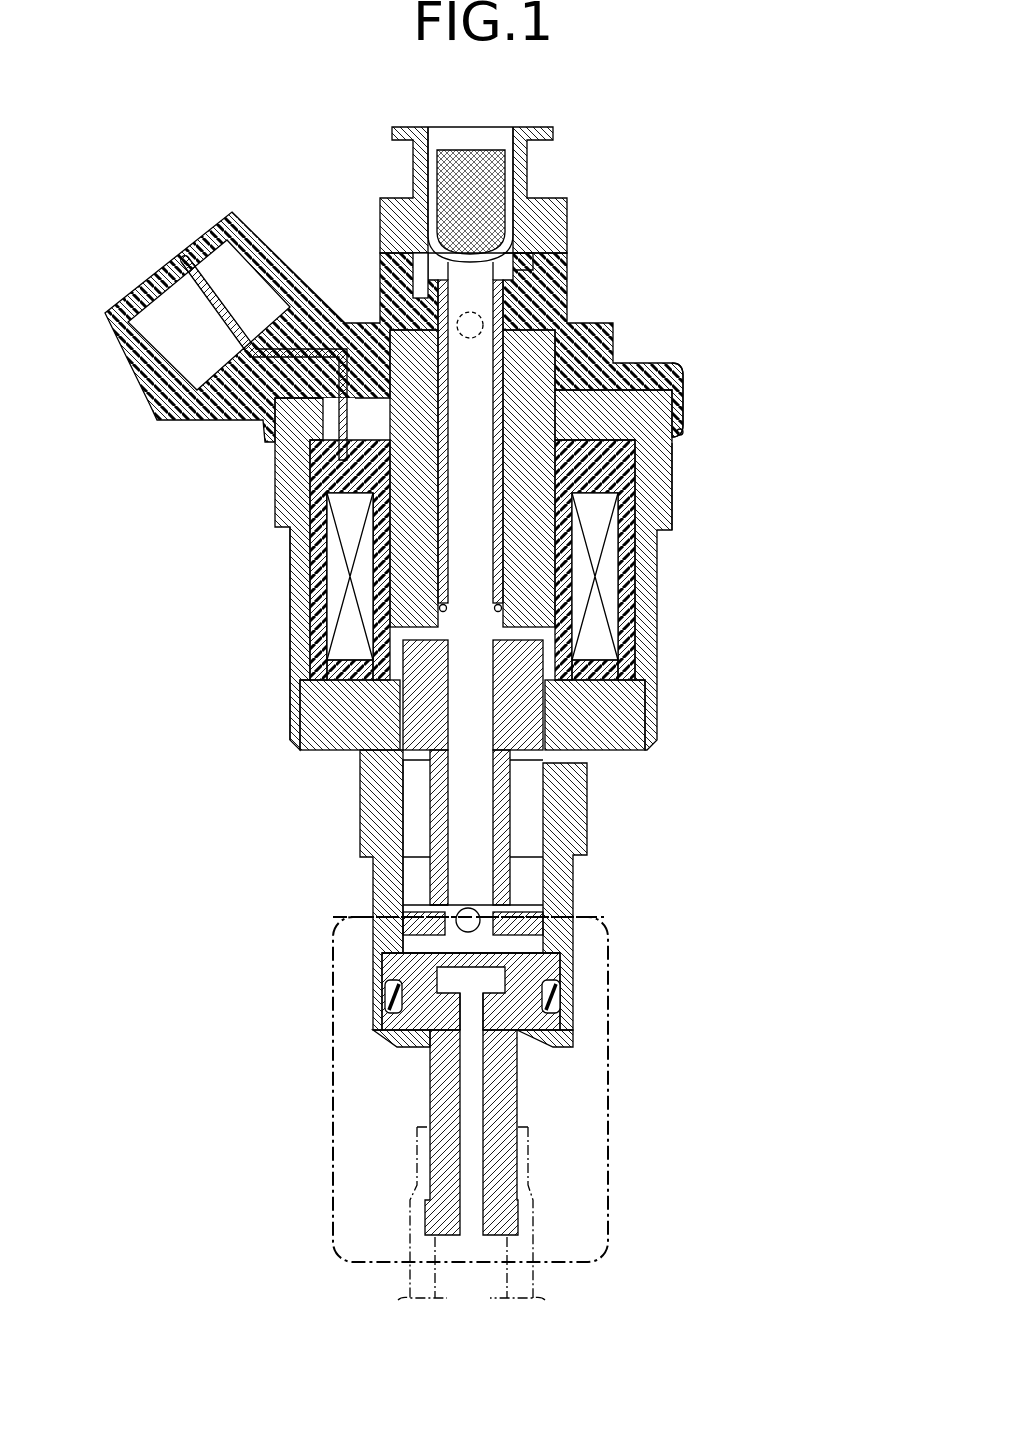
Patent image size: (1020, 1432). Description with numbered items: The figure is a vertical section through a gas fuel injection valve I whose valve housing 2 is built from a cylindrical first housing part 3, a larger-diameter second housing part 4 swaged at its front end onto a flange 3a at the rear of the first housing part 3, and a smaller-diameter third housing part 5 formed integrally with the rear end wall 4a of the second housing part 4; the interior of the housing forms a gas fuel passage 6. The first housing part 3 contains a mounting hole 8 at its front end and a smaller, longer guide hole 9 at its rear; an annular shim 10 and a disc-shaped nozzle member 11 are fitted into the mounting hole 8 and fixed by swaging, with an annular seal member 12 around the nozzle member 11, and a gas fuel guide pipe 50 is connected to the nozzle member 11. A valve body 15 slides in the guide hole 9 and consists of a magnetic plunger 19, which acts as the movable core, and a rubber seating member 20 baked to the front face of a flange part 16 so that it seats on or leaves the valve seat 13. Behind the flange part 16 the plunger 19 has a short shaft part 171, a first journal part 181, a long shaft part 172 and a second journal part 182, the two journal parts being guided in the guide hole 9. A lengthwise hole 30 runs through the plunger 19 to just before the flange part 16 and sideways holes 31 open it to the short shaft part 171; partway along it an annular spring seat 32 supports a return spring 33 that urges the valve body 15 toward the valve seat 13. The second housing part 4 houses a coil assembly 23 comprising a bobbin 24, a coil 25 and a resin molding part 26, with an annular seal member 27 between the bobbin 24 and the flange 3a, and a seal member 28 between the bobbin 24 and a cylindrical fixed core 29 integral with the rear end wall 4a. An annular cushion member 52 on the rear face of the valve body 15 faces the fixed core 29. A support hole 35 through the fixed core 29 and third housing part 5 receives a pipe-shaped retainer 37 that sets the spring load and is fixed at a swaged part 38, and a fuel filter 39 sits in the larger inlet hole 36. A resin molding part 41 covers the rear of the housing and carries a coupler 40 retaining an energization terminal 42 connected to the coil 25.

The gas fuel injection valve I is at (660, 275).
The valve housing 2 is at (672, 520).
The first housing part 3 is at (588, 828).
The flange 3a is at (645, 690).
The second housing part 4 is at (650, 600).
The rear end wall 4a is at (625, 400).
The third housing part 5 is at (567, 226).
The gas fuel passage 6 is at (436, 256).
The mounting hole 8 is at (400, 1045).
The guide hole 9 is at (415, 775).
The annular shim 10 is at (415, 955).
The nozzle member 11 is at (500, 1082).
The annular seal member 12 is at (388, 995).
The valve seat 13 is at (560, 928).
The valve body 15 is at (432, 790).
The flange part 16 is at (436, 925).
The short shaft part 171 is at (535, 918).
The long shaft part 172 is at (507, 800).
The first journal part 181 is at (530, 886).
The second journal part 182 is at (530, 720).
The plunger 19 is at (400, 712).
The seating member 20 is at (433, 975).
The coil assembly 23 is at (305, 574).
The bobbin 24 is at (388, 532).
The coil 25 is at (335, 555).
The resin molding part 26 is at (310, 598).
The annular seal member 27 is at (338, 655).
The seal member 28 is at (392, 460).
The fixed core 29 is at (437, 500).
The lengthwise hole 30 is at (462, 830).
The sideways holes 31 is at (462, 910).
The spring seat 32 is at (440, 708).
The return spring 33 is at (446, 606).
The support hole 35 is at (449, 435).
The inlet hole 36 is at (533, 266).
The pipe-shaped retainer 37 is at (412, 292).
The swaged part 38 is at (482, 318).
The fuel filter 39 is at (432, 212).
The coupler 40 is at (270, 262).
The resin molding part 41 is at (686, 418).
The energization terminal 42 is at (205, 283).
The gas fuel guide pipe 50 is at (412, 1207).
The annular cushion member 52 is at (540, 630).